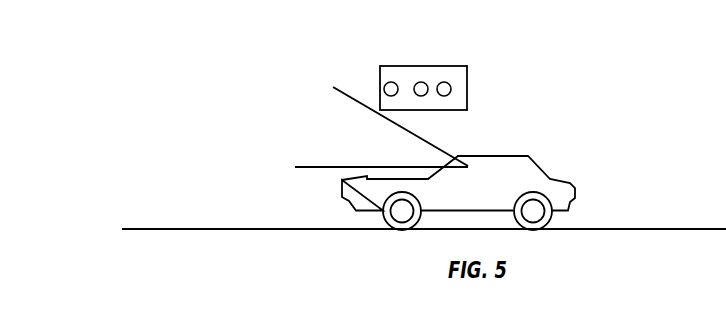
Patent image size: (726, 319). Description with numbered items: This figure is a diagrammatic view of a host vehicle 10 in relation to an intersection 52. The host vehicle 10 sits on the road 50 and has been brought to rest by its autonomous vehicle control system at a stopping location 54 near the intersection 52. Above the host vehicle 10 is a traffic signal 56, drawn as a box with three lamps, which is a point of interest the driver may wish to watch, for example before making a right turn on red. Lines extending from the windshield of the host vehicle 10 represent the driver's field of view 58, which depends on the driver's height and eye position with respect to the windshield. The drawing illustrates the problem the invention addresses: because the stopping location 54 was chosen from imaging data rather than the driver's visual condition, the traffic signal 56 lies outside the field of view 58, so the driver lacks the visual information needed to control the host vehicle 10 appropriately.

The host vehicle 10 is at (458, 195).
The road 50 is at (660, 228).
The intersection 52 is at (247, 230).
The stopping location 54 is at (403, 230).
The traffic signal 56 is at (467, 88).
The field of view 58 is at (372, 152).